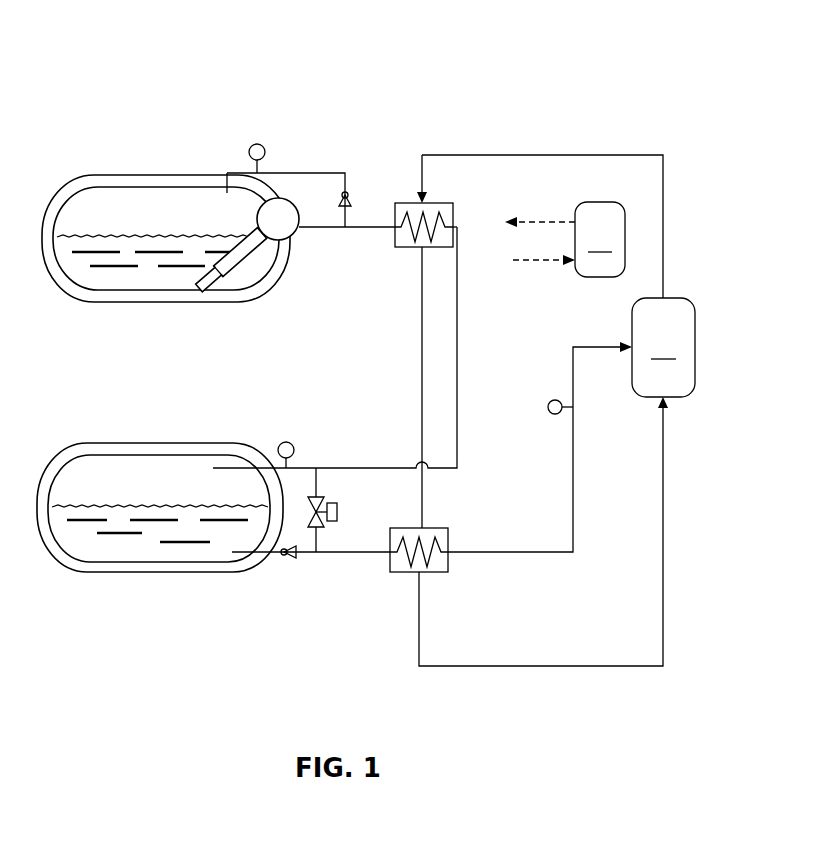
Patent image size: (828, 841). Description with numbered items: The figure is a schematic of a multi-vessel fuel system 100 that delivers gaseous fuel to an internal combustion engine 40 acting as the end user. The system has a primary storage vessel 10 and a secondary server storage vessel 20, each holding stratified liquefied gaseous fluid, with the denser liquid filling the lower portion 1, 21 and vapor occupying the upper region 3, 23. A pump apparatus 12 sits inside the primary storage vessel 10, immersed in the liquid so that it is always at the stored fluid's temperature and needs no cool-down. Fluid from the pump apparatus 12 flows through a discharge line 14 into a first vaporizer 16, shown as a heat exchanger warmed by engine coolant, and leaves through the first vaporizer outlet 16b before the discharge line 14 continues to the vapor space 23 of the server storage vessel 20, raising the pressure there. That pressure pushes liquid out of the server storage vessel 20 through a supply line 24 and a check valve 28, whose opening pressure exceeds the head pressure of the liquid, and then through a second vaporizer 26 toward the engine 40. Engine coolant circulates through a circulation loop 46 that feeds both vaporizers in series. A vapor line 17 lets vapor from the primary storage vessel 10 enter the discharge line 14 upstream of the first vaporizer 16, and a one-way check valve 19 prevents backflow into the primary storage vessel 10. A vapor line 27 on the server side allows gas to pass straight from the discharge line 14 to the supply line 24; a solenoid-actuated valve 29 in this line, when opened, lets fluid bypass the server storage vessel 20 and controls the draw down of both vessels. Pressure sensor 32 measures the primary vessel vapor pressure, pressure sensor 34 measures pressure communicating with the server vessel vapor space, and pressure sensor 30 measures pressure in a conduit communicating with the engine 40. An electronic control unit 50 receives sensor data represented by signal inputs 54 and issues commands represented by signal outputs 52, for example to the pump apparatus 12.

The multi-vessel fuel system 100 is at (66, 80).
The primary storage vessel 10 is at (88, 176).
The upper region 3 is at (80, 217).
The lower portion 1 is at (80, 264).
The pump apparatus 12 is at (274, 246).
The pressure sensor 32 is at (253, 143).
The vapor line 17 is at (303, 172).
The one-way check valve 19 is at (350, 194).
The discharge line 14 is at (366, 230).
The first vaporizer 16 is at (410, 250).
The first vaporizer outlet 16b is at (453, 226).
The circulation loop 46 is at (664, 240).
The internal combustion engine 40 is at (663, 347).
The electronic control unit 50 is at (600, 239).
The signal outputs 52 is at (540, 215).
The signal inputs 54 is at (550, 266).
The pressure sensor 30 is at (548, 407).
The supply line 24 is at (572, 483).
The second vaporizer 26 is at (437, 540).
The server storage vessel 20 is at (146, 443).
The vapor space 23 is at (77, 487).
The lower portion 21 is at (80, 535).
The pressure sensor 34 is at (285, 442).
The vapor line 27 is at (318, 490).
The valve 29 is at (338, 512).
The check valve 28 is at (290, 560).